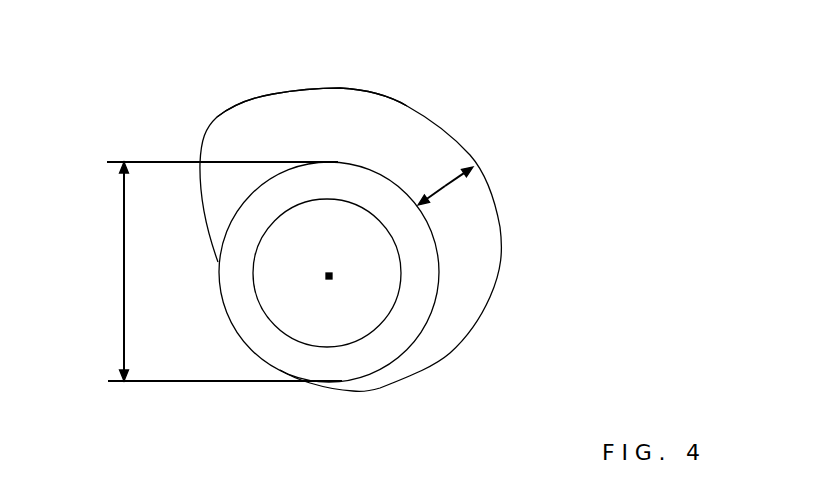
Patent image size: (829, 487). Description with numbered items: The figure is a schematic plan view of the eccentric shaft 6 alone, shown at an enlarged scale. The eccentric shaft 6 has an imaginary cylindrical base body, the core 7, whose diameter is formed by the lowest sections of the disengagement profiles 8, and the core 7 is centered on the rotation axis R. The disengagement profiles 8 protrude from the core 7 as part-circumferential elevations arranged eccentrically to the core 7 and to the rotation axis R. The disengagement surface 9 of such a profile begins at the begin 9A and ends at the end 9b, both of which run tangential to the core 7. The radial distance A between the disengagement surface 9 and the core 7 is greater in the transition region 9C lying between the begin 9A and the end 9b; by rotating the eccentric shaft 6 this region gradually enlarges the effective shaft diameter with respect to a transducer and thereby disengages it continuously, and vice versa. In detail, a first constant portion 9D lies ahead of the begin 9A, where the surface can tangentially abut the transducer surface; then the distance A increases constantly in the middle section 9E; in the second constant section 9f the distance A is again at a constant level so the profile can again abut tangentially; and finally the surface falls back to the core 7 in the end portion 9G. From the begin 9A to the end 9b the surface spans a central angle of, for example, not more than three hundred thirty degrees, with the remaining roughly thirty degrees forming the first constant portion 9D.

The eccentric shaft 6 is at (332, 317).
The core 7 is at (123, 260).
The disengagement profiles 8 is at (372, 241).
The disengagement surface 9 is at (443, 128).
The second constant section 9f is at (298, 74).
The end portion 9G is at (179, 207).
The end of the disengagement profile 9b is at (201, 285).
The transition region 9C is at (473, 253).
The first constant portion 9D is at (234, 353).
The begin of the disengagement profile 9A is at (270, 378).
The middle section 9E is at (499, 335).
The radial distance A is at (447, 187).
The rotation axis R is at (332, 273).